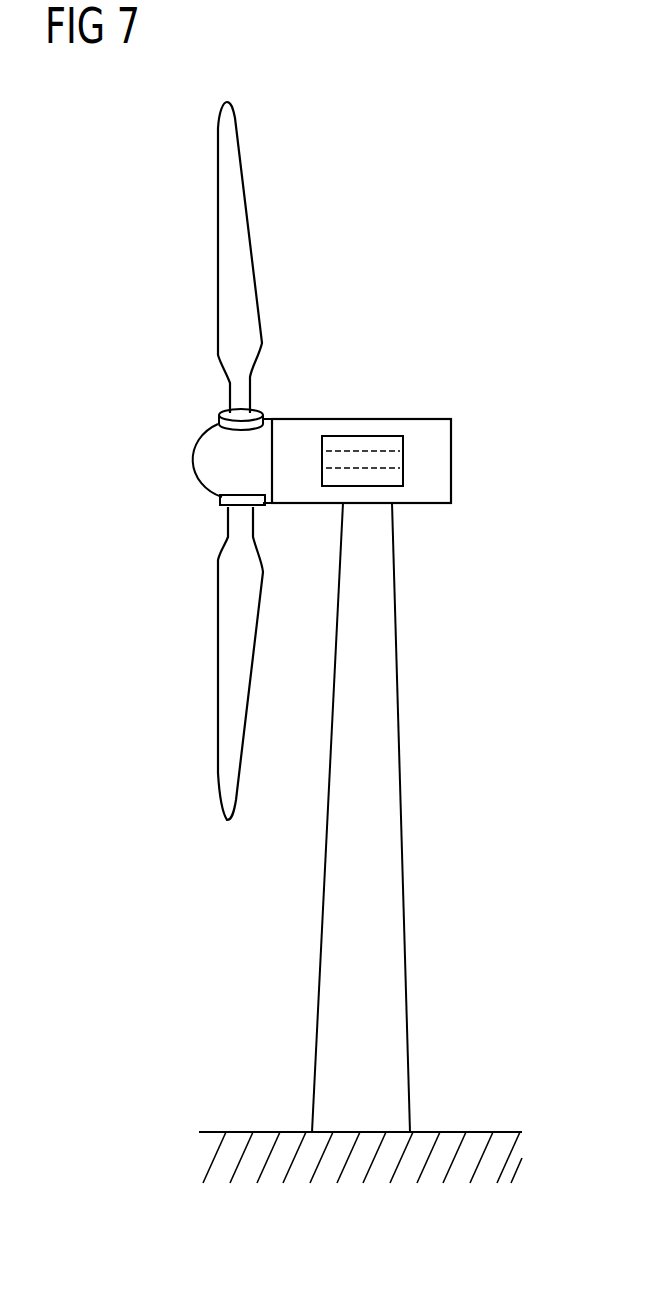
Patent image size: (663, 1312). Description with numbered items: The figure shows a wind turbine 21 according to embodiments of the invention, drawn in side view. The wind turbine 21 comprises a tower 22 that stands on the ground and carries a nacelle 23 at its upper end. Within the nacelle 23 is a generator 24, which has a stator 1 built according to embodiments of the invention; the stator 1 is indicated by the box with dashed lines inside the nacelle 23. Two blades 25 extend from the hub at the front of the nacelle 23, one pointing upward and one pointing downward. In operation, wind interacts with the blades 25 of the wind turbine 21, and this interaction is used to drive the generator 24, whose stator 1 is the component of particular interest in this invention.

The stator 1 is at (362, 436).
The wind turbine 21 is at (470, 500).
The tower 22 is at (402, 820).
The nacelle 23 is at (451, 455).
The generator 24 is at (393, 425).
The blades 25 is at (218, 253).